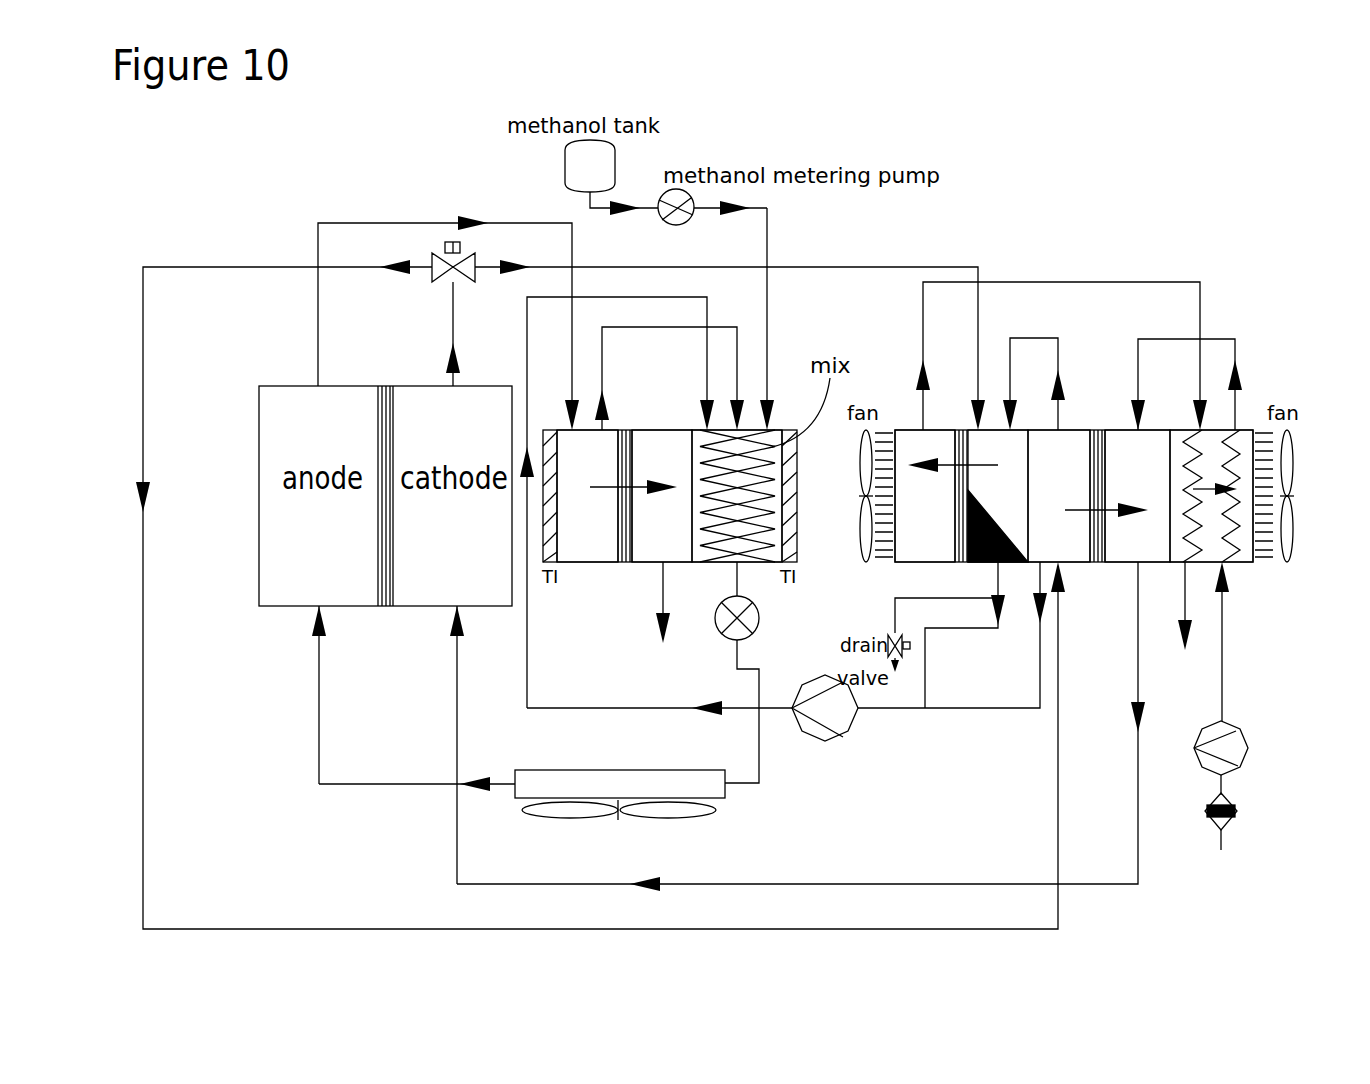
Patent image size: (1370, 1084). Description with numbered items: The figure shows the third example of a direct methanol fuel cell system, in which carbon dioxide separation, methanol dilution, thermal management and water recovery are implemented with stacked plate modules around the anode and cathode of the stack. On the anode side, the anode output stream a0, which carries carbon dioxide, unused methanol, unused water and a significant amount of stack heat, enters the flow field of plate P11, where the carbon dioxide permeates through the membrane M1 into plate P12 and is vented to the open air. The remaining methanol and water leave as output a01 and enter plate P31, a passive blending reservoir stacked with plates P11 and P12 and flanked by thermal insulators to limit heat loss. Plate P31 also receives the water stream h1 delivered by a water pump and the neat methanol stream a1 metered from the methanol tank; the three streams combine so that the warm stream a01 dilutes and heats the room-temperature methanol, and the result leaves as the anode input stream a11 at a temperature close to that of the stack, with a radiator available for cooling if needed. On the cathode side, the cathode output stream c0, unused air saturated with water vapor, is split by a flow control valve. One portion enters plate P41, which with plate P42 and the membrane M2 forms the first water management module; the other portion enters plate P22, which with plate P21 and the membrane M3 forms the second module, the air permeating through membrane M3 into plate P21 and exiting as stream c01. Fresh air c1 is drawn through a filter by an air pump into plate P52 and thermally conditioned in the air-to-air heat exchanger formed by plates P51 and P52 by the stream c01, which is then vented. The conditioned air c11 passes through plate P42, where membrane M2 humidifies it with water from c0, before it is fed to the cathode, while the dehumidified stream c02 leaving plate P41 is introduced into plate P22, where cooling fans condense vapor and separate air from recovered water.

The plate P11 is at (617, 496).
The plate P12 is at (638, 553).
The plate P31 is at (737, 496).
The membrane M1 is at (620, 510).
The plate P21 is at (946, 496).
The plate P22 is at (998, 496).
The membrane M3 is at (961, 510).
The plate P41 is at (1088, 496).
The plate P42 is at (1137, 496).
The membrane M2 is at (1101, 510).
The plate P51 is at (1228, 562).
The plate P52 is at (1240, 443).
The anode output stream a0 is at (448, 323).
The output stream a01 is at (669, 378).
The neat methanol stream a1 is at (782, 319).
The anode input stream a11 is at (556, 691).
The cathode output stream c0 is at (617, 594).
The air stream c01 is at (1047, 492).
The dehumidified stream c02 is at (1034, 384).
The fresh air stream c1 is at (1263, 706).
The air stream c11 is at (822, 601).
The water stream h1 is at (783, 547).